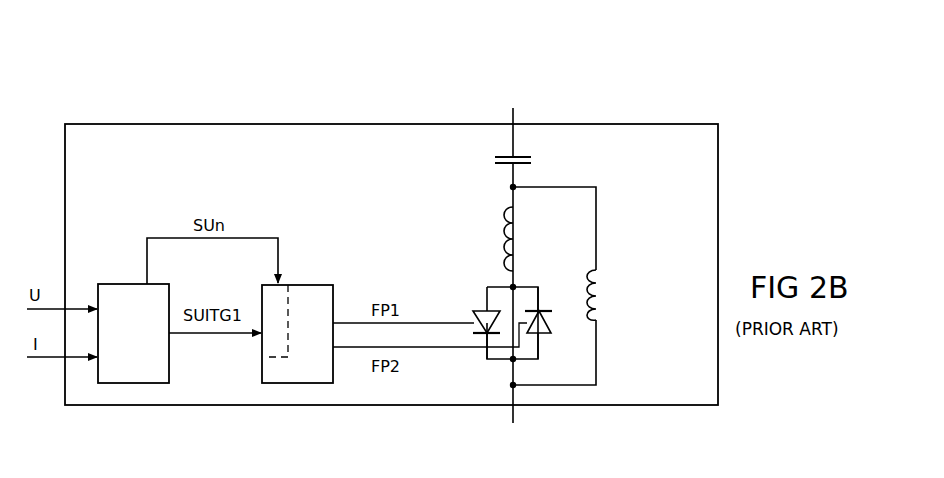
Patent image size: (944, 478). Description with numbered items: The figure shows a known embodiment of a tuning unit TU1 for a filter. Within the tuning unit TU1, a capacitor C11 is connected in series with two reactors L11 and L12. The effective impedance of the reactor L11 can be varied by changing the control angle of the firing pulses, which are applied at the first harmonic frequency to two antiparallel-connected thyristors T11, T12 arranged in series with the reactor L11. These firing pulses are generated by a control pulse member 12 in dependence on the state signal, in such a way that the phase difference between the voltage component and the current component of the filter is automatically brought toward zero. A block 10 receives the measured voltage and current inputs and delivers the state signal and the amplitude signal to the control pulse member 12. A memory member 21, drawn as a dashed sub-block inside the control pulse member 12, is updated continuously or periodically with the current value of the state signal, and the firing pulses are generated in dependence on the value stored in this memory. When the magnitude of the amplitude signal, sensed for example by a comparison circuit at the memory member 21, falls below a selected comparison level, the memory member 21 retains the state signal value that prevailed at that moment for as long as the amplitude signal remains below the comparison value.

The tuning unit TU1 is at (360, 124).
The measuring unit 10 is at (128, 284).
The control pulse member 12 is at (307, 285).
The memory member 21 is at (289, 338).
The capacitor C11 is at (498, 165).
The reactor L11 is at (526, 230).
The reactor L12 is at (602, 290).
The thyristor T11 is at (481, 311).
The thyristor T12 is at (548, 336).